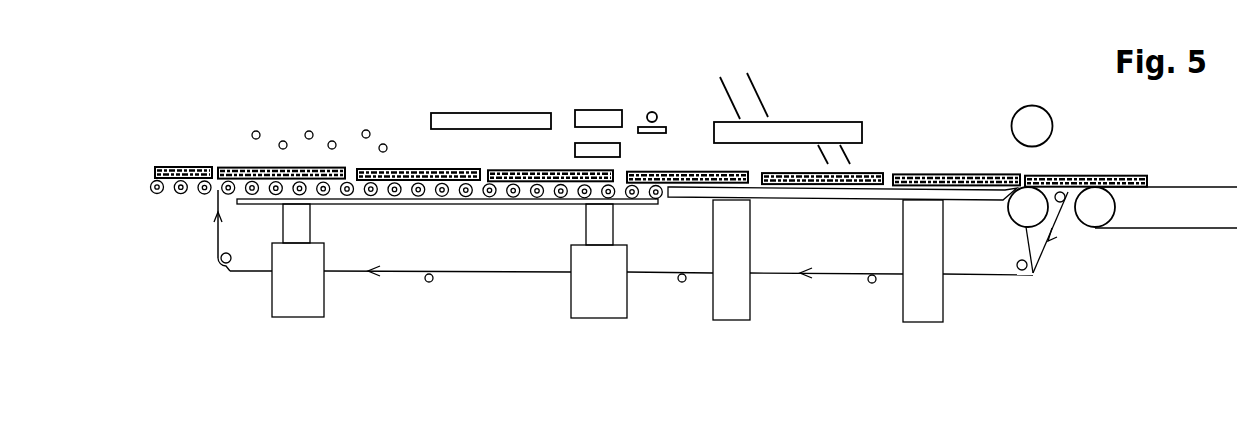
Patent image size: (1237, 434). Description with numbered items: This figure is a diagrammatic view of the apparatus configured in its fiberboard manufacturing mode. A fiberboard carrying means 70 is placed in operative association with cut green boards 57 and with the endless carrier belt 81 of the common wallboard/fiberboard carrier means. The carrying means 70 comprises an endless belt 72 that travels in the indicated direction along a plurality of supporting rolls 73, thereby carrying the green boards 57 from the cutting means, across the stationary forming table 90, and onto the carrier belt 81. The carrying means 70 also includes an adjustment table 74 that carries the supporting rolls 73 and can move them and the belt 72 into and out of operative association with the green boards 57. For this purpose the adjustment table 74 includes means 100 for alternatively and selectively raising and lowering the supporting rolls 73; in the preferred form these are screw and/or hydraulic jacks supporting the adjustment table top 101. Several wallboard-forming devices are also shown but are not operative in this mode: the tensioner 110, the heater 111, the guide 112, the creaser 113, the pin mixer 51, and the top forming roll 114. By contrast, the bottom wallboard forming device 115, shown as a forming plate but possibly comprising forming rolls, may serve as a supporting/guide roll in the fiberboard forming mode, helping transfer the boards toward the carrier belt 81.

The cut green boards 57 is at (181, 167).
The tensioner 110 is at (327, 125).
The heater 111 is at (500, 112).
The guide 112 is at (606, 110).
The creaser 113 is at (664, 119).
The pin mixer 51 is at (825, 120).
The top forming roll 114 is at (1030, 105).
The adjustment table top 101 is at (560, 206).
The raising and lowering means 100 is at (326, 308).
The endless belt 72 is at (463, 274).
The supporting rolls 73 is at (222, 192).
The adjustment table 74 is at (477, 210).
The stationary forming table 90 is at (847, 200).
The fiberboard carrying means 70 is at (976, 297).
The bottom wallboard forming device 115 is at (1030, 268).
The carrier belt 81 is at (1183, 230).